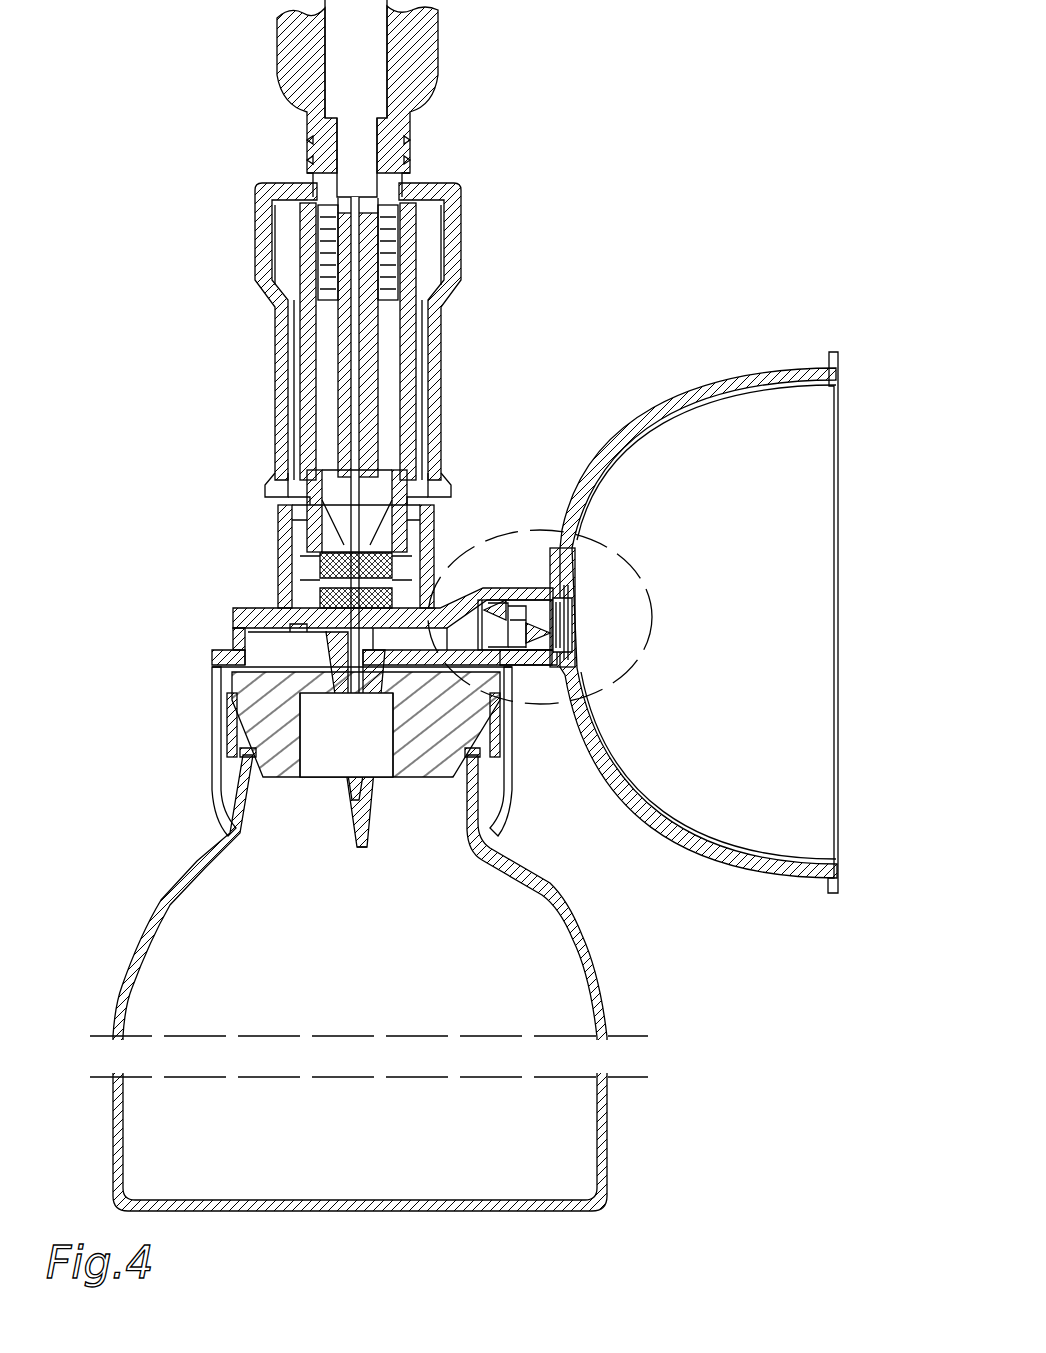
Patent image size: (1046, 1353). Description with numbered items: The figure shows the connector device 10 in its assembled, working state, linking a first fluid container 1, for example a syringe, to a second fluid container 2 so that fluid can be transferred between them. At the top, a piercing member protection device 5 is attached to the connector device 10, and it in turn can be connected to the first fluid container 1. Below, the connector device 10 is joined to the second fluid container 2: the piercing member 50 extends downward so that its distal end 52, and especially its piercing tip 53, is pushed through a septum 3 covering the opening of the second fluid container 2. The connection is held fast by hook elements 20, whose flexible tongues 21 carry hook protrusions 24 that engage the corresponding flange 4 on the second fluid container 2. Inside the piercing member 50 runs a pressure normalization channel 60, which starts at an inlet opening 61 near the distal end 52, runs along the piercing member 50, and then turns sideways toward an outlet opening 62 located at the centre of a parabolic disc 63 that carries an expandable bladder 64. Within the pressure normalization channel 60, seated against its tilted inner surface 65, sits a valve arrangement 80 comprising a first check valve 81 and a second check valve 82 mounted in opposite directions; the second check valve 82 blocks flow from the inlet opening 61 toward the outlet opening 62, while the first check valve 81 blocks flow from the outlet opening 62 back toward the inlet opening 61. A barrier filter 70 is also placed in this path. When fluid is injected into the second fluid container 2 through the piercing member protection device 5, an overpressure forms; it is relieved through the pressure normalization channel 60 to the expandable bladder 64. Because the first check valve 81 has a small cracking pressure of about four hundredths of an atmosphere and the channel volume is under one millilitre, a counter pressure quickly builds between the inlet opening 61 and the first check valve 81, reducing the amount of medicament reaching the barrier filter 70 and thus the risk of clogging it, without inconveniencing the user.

The first fluid container 1 is at (282, 110).
The second fluid container 2 is at (369, 979).
The septum 3 is at (278, 695).
The flange 4 is at (228, 730).
The piercing member protection device 5 is at (252, 349).
The connector device 10 is at (229, 597).
The hook elements 20 is at (331, 743).
The flexible tongues 21 is at (220, 745).
The hook protrusions 24 is at (232, 780).
The piercing member 50 is at (382, 730).
The distal end 52 is at (352, 832).
The piercing tip 53 is at (360, 850).
The pressure normalization channel 60 is at (398, 620).
The inlet opening 61 is at (375, 810).
The outlet opening 62 is at (568, 611).
The parabolic disc 63 is at (694, 622).
The expandable bladder 64 is at (605, 490).
The inner surface 65 is at (540, 604).
The barrier filter 70 is at (567, 653).
The valve arrangement 80 is at (516, 592).
The first check valve 81 is at (522, 665).
The second check valve 82 is at (487, 600).